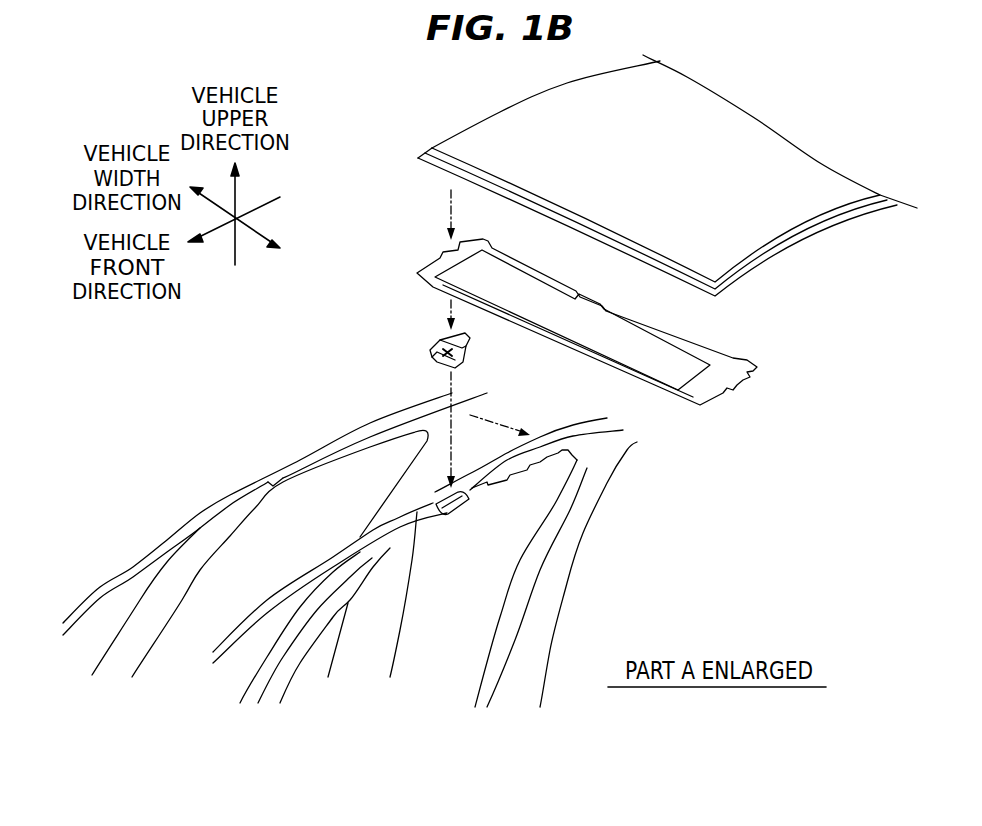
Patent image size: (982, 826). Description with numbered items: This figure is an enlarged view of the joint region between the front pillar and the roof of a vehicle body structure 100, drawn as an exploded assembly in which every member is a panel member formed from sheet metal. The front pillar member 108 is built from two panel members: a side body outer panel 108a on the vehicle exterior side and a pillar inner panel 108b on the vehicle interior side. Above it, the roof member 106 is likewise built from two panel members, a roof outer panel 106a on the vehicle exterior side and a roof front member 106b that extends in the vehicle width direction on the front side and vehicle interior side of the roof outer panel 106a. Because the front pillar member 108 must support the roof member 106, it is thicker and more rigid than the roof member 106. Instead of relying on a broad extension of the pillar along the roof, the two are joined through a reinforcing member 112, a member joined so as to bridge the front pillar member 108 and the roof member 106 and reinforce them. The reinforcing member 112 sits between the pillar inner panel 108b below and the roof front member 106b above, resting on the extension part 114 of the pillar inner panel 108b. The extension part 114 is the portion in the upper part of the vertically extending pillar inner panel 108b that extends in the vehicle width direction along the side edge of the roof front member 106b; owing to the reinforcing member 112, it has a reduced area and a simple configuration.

The vehicle roof structure 100 is at (411, 139).
The roof member 106 is at (868, 292).
The roof outer panel 106a is at (727, 252).
The roof front member 106b is at (733, 358).
The front pillar member 108 is at (175, 368).
The side body outer panel 108a is at (275, 475).
The pillar inner panel 108b is at (360, 537).
The reinforcing member 112 is at (433, 343).
The extension part 114 is at (472, 486).